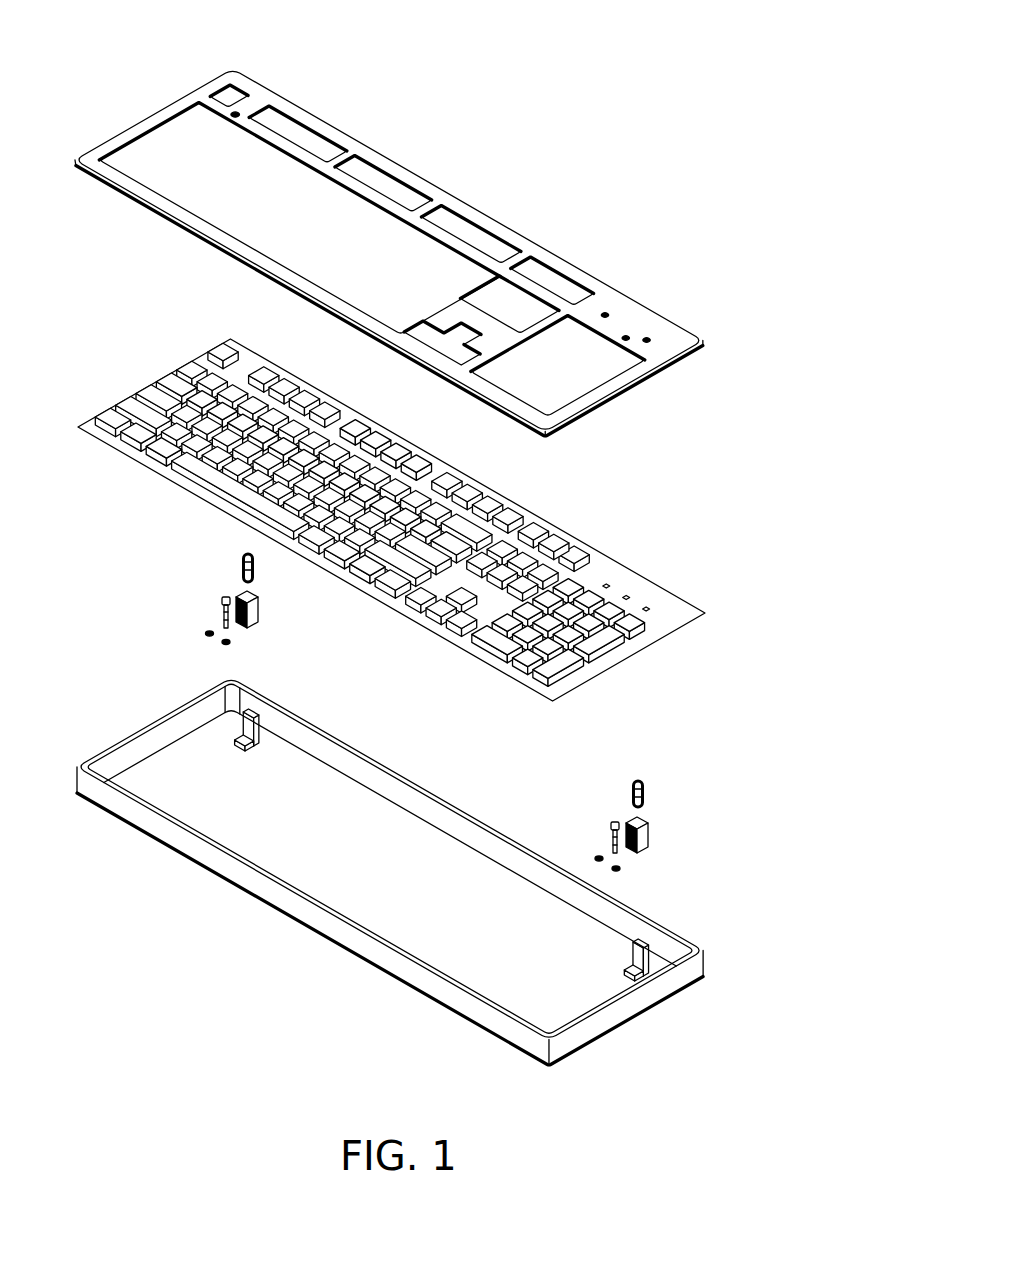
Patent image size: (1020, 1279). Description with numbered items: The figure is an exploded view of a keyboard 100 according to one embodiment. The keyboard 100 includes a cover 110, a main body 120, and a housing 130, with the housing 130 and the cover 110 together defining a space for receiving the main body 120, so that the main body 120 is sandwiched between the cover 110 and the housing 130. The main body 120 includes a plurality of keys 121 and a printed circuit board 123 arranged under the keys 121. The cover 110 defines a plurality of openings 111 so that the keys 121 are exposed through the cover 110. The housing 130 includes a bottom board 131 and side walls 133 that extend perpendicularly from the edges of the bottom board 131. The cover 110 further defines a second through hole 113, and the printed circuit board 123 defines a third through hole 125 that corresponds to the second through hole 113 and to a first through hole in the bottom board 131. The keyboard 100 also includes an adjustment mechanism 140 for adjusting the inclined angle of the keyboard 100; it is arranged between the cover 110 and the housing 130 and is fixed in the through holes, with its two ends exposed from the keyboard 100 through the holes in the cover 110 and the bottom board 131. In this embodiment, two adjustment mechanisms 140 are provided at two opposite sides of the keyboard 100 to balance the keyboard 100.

The keyboard 100 is at (386, 34).
The cover 110 is at (389, 253).
The openings 111 is at (388, 186).
The second through hole 113 is at (627, 327).
The main body 120 is at (391, 520).
The keys 121 is at (572, 552).
The printed circuit board 123 is at (662, 625).
The third through hole 125 is at (626, 608).
The housing 130 is at (389, 874).
The bottom board 131 is at (318, 880).
The side walls 133 is at (640, 995).
The adjustment mechanism 140 is at (195, 603).